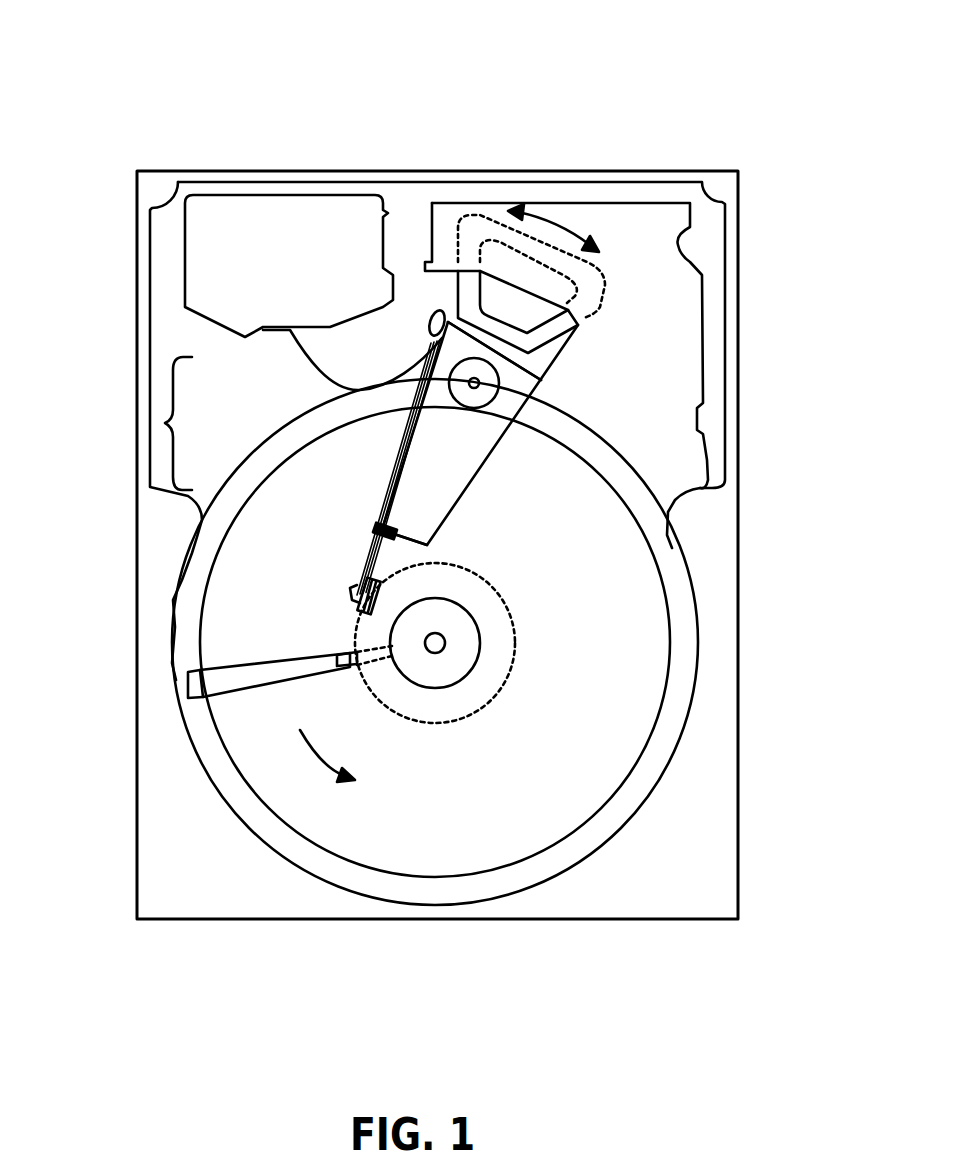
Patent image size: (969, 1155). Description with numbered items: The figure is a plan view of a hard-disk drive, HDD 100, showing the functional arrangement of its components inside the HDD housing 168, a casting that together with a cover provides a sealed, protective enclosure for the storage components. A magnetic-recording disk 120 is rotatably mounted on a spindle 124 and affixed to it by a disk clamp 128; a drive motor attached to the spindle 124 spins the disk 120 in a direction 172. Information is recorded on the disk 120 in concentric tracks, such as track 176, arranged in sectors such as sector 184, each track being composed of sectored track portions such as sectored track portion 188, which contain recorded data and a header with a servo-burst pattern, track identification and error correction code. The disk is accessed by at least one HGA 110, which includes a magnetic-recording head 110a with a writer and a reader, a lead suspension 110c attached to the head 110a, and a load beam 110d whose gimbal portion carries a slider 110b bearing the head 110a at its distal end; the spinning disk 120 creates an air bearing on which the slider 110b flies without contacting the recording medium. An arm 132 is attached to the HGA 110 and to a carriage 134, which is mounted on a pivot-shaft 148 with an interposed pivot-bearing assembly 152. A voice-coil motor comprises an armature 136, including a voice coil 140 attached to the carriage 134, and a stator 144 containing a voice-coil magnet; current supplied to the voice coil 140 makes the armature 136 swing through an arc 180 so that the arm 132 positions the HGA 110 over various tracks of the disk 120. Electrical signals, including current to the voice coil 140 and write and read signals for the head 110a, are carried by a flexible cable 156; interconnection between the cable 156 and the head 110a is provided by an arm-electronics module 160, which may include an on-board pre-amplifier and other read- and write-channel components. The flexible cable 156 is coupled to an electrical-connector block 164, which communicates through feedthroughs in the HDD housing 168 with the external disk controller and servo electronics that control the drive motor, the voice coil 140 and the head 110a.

The HDD 100 is at (176, 84).
The HGA 110 is at (164, 423).
The magnetic-recording head 110a is at (360, 607).
The slider 110b is at (358, 588).
The lead suspension 110c is at (377, 555).
The load beam 110d is at (377, 527).
The magnetic-recording disk 120 is at (607, 604).
The spindle 124 is at (446, 643).
The disk clamp 128 is at (460, 656).
The arm 132 is at (424, 487).
The carriage 134 is at (492, 404).
The armature 136 is at (453, 305).
The voice coil 140 is at (472, 297).
The stator 144 is at (677, 292).
The pivot-shaft 148 is at (479, 383).
The pivot-bearing assembly 152 is at (486, 398).
The flexible cable 156 is at (303, 360).
The arm-electronics module 160 is at (433, 361).
The electrical-connector block 164 is at (212, 268).
The HDD housing 168 is at (722, 183).
The direction 172 is at (323, 757).
The track 176 is at (507, 607).
The arc 180 is at (548, 228).
The sector 184 is at (183, 683).
The sectored track portion 188 is at (348, 655).